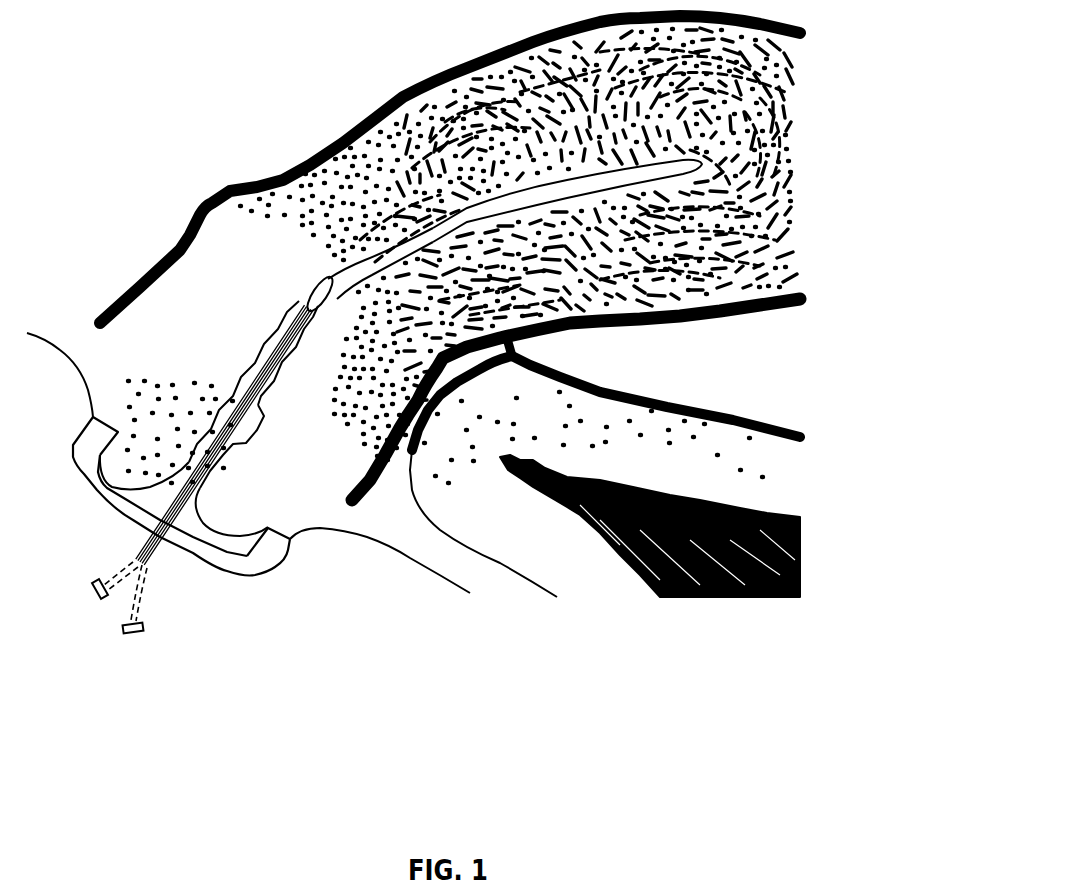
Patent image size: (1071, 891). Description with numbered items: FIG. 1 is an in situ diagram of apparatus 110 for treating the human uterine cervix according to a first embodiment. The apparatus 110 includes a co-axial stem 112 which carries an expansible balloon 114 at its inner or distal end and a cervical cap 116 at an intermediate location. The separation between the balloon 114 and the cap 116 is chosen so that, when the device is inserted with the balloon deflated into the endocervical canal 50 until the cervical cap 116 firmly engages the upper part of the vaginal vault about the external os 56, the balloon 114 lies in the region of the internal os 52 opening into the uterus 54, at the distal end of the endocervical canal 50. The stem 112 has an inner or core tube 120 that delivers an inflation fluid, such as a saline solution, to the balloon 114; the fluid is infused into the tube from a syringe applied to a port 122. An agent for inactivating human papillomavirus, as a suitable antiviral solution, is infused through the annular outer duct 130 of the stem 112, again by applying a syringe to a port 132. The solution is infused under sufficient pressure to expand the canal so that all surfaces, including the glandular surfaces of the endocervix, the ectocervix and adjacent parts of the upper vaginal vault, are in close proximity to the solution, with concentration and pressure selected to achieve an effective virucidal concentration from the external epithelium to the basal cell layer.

The endocervical canal 50 is at (230, 400).
The internal os 52 is at (331, 300).
The uterus 54 is at (460, 217).
The external os 56 is at (200, 490).
The apparatus 110 is at (220, 578).
The co-axial stem 112 is at (266, 396).
The expansible balloon 114 is at (318, 295).
The cervical cap 116 is at (263, 563).
The core tube 120 is at (225, 441).
The port 122 is at (139, 634).
The annular outer duct 130 is at (242, 425).
The port 132 is at (97, 596).